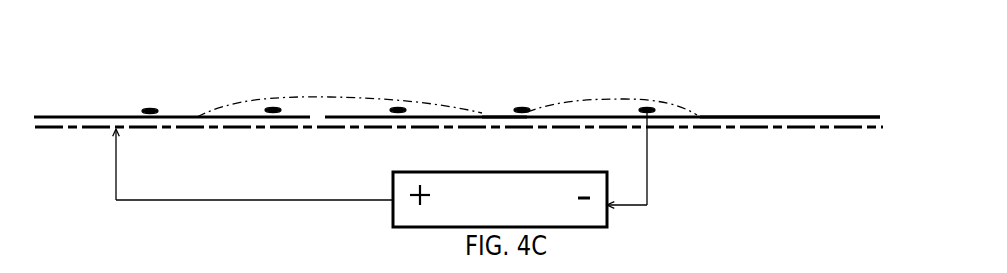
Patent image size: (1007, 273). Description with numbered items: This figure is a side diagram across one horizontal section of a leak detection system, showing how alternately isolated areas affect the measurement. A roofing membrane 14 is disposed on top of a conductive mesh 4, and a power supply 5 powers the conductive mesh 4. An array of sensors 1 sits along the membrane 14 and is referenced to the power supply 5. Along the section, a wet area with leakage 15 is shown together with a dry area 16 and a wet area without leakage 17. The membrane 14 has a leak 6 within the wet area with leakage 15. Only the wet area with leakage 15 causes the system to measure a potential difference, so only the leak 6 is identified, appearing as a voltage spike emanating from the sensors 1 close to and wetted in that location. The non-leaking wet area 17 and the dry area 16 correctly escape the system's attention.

The sensors 1 is at (155, 111).
The conductive mesh 4 is at (733, 128).
The power supply 5 is at (442, 172).
The leak 6 is at (322, 116).
The roofing membrane 14 is at (712, 115).
The wet area with leakage 15 is at (372, 100).
The dry area 16 is at (500, 115).
The wet area without leakage 17 is at (677, 102).